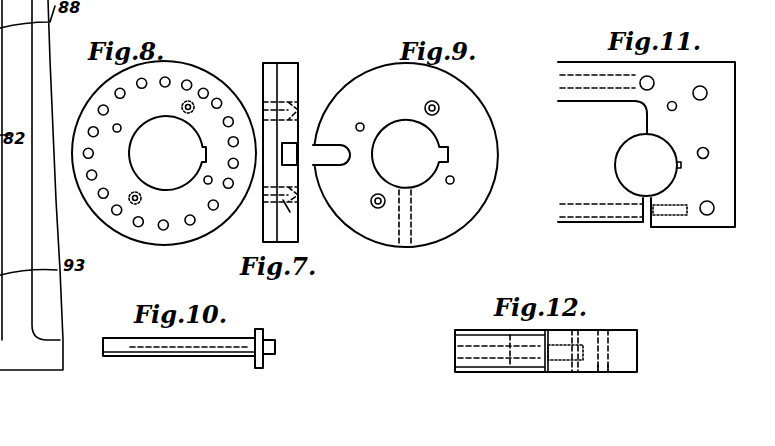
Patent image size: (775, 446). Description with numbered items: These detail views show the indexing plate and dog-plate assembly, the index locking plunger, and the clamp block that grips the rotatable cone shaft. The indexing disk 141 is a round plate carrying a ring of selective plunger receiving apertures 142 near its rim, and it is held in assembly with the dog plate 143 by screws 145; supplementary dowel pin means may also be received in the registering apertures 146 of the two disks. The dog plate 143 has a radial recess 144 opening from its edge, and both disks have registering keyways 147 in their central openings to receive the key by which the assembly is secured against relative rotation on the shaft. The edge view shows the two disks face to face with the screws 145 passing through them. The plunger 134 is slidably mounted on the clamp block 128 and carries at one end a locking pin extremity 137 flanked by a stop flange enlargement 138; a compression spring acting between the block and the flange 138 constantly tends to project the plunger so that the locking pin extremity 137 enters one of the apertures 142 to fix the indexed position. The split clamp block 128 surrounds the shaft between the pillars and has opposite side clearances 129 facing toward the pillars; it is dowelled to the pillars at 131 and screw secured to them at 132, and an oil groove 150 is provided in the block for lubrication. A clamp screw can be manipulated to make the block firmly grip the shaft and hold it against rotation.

In FIG. 8, the indexing disk 141 is at (212, 60).
In FIG. 7, the indexing disk 141 is at (270, 63).
In FIG. 8, the plunger receiving apertures 142 is at (229, 117).
In FIG. 7, the dog plate 143 is at (290, 82).
In FIG. 9, the dog plate 143 is at (463, 97).
In FIG. 7, the radial recess 144 is at (285, 162).
In FIG. 9, the radial recess 144 is at (331, 145).
In FIG. 7, the screws 145 is at (283, 200).
In FIG. 8, the registering apertures 146 is at (120, 131).
In FIG. 9, the registering apertures 146 is at (447, 178).
In FIG. 8, the registering keyways 147 is at (203, 150).
In FIG. 9, the registering keyways 147 is at (450, 152).
In FIG. 11, the split clamp block 128 is at (720, 133).
In FIG. 12, the split clamp block 128 is at (637, 342).
In FIG. 11, the side clearances 129 is at (650, 99).
In FIG. 12, the side clearances 129 is at (465, 366).
In FIG. 11, the dowel 131 is at (708, 153).
In FIG. 11, the screw securing point 132 is at (602, 224).
In FIG. 12, the screw securing point 132 is at (613, 365).
In FIG. 11, the oil groove 150 is at (681, 166).
In FIG. 12, the oil groove 150 is at (580, 342).
In FIG. 10, the plunger 134 is at (203, 352).
In FIG. 10, the locking pin extremity 137 is at (270, 342).
In FIG. 10, the stop flange enlargement 138 is at (265, 367).